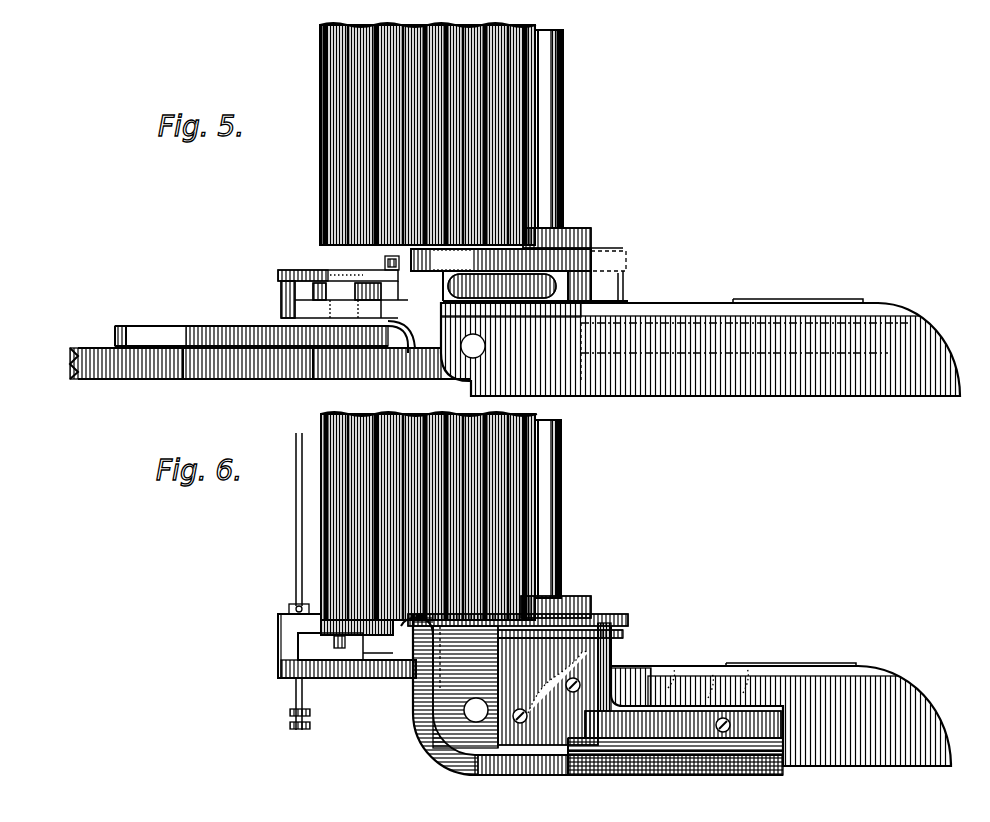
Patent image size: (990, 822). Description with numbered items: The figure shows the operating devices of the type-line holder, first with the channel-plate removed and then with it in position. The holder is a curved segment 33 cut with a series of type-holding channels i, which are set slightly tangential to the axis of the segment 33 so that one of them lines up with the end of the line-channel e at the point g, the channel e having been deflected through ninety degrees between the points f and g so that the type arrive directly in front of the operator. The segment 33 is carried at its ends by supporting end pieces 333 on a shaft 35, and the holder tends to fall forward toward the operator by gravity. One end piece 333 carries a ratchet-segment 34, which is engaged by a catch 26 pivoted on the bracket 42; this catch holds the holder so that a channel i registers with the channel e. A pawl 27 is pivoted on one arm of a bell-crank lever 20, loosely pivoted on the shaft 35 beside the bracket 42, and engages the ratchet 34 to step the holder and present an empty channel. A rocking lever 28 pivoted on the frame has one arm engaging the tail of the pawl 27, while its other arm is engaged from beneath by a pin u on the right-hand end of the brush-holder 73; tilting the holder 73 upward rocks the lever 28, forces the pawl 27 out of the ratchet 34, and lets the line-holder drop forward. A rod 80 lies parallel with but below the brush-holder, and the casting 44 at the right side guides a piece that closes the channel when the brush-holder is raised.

In FIG. 5, the type-holding channels i is at (340, 66).
In FIG. 6, the type-holding channels i is at (444, 408).
In FIG. 5, the curved segment 33 is at (312, 176).
In FIG. 6, the curved segment 33 is at (505, 509).
In FIG. 5, the shaft 35 is at (542, 105).
In FIG. 6, the shaft 35 is at (545, 463).
In FIG. 5, the supporting end pieces 333 is at (585, 227).
In FIG. 5, the ratchet-segment 34 is at (585, 243).
In FIG. 5, the catch 26 is at (618, 251).
In FIG. 6, the catch 26 is at (620, 628).
In FIG. 5, the pawl 27 is at (519, 275).
In FIG. 5, the rocking lever 28 is at (341, 260).
In FIG. 5, the bell-crank lever 20 is at (229, 330).
In FIG. 5, the bracket 42 is at (694, 392).
In FIG. 6, the bracket 42 is at (638, 666).
In FIG. 6, the rod 80 is at (286, 521).
In FIG. 6, the brush-holder 73 is at (318, 558).
In FIG. 6, the pin u is at (332, 642).
In FIG. 6, the point g is at (438, 612).
In FIG. 6, the point f is at (440, 707).
In FIG. 6, the casting 44 is at (412, 690).
In FIG. 6, the line-channel e is at (612, 745).